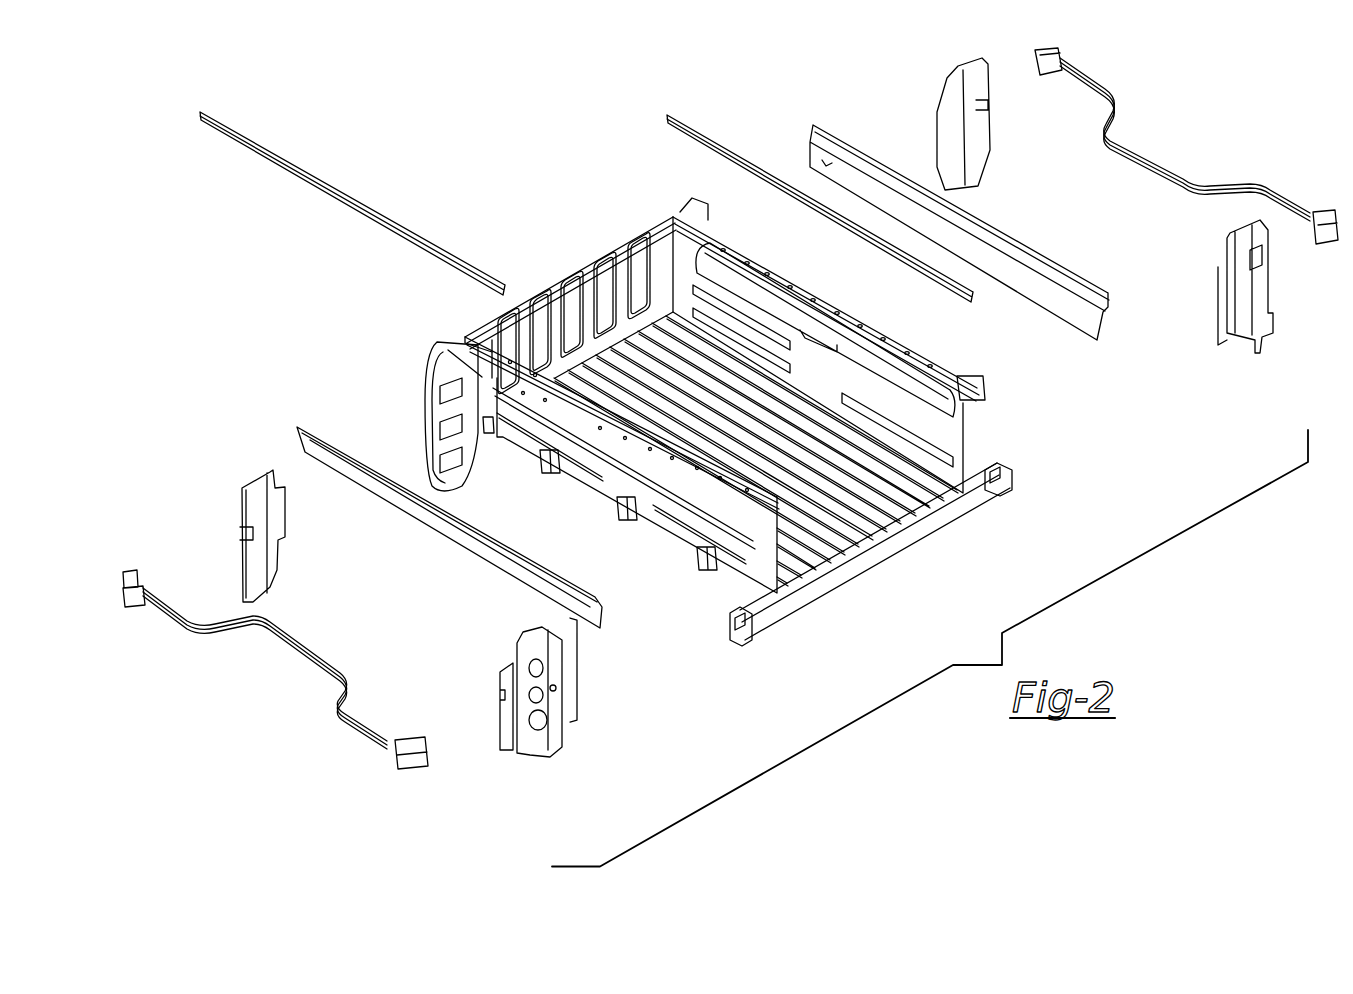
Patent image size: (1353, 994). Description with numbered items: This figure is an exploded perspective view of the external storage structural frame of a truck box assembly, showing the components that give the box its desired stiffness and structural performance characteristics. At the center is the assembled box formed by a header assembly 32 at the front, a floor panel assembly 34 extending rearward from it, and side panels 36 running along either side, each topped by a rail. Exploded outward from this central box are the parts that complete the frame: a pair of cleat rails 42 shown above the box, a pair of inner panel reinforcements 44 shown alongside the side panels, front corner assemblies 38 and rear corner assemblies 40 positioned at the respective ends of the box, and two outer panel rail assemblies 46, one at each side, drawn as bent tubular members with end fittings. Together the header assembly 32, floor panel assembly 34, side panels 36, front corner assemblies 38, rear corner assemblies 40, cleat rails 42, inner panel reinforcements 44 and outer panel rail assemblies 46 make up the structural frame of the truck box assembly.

The header assembly 32 is at (598, 248).
The floor panel assembly 34 is at (900, 566).
The side panels 36 is at (502, 345).
The front corner assemblies 38 is at (928, 98).
The rear corner assemblies 40 is at (1243, 340).
The cleat rails 42 is at (350, 195).
The inner panel reinforcements 44 is at (1077, 313).
The outer panel rail assemblies 46 is at (1125, 83).